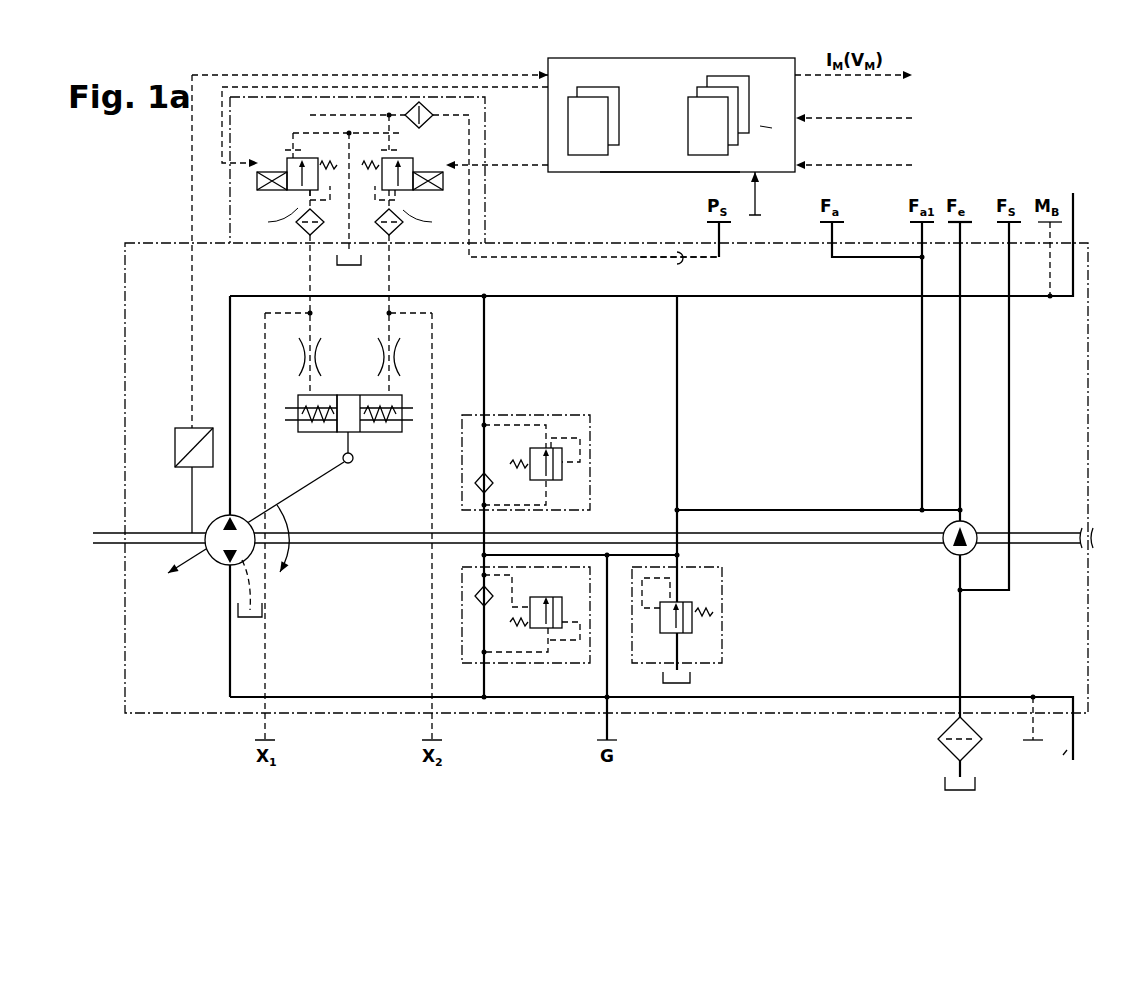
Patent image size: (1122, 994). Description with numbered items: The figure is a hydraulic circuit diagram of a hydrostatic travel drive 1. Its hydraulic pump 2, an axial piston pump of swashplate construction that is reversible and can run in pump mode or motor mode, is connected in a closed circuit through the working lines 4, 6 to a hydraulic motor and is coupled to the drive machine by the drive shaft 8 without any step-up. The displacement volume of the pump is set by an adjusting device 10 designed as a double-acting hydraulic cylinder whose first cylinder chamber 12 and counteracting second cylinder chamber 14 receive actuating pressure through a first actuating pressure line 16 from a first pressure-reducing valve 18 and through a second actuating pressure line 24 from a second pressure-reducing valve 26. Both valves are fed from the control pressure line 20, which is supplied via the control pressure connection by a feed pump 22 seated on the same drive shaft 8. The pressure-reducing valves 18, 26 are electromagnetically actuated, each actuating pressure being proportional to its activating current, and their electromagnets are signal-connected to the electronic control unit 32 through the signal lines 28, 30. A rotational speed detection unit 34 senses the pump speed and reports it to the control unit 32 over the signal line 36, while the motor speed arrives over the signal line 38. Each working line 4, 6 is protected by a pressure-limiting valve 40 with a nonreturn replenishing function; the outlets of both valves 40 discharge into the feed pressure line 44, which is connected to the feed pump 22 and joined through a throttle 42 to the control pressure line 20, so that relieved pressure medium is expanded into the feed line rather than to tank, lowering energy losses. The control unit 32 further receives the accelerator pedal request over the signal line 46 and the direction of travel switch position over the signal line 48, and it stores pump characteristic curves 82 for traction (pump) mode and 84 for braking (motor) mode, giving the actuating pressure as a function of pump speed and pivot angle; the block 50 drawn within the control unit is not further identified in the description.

The hydrostatic travel drive 1 is at (1030, 138).
The hydraulic pump 2 is at (218, 562).
The working line 4 is at (806, 300).
The working line 6 is at (805, 697).
The drive shaft 8 is at (103, 545).
The adjusting device 10 is at (366, 465).
The first cylinder chamber 12 is at (298, 405).
The second cylinder chamber 14 is at (410, 405).
The first actuating pressure line 16 is at (310, 282).
The first pressure-reducing valve 18 is at (292, 158).
The control pressure line 20 is at (469, 122).
The feed pump 22 is at (966, 522).
The second actuating pressure line 24 is at (392, 282).
The second pressure-reducing valve 26 is at (410, 157).
The signal line 28 is at (222, 150).
The signal line 30 is at (548, 166).
The electronic control unit 32 is at (667, 172).
The rotational speed detection unit 34 is at (182, 428).
The signal line 36 is at (192, 197).
The signal line 38 is at (890, 118).
The pressure-limiting valve 40 is at (462, 470).
The throttle 42 is at (690, 265).
The feed pressure line 44 is at (800, 510).
The signal line 46 is at (890, 165).
The signal line 48 is at (758, 203).
The data memory 50 is at (775, 128).
The pump characteristic curve 82 is at (688, 150).
The pump characteristic curve 84 is at (619, 122).